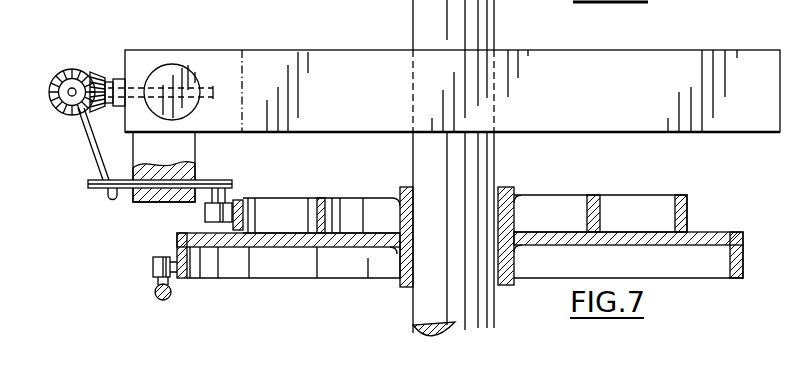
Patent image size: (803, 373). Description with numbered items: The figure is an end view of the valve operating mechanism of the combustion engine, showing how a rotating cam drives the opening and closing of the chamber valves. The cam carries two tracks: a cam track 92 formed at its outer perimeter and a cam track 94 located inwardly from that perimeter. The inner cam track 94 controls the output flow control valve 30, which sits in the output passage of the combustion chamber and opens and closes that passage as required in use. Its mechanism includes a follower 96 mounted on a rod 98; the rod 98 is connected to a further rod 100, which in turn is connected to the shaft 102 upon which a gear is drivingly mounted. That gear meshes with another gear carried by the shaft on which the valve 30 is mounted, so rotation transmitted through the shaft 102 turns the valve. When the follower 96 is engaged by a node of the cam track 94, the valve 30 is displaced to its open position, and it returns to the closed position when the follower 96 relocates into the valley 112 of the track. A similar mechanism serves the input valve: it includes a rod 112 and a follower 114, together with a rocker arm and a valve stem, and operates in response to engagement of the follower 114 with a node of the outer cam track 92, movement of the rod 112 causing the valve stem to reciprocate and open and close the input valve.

The output flow control valve 30 is at (170, 72).
The cam track 92 is at (177, 246).
The cam track 94 is at (244, 210).
The follower 96 is at (205, 216).
The rod 98 is at (213, 180).
The further rod 100 is at (90, 145).
The shaft 102 is at (70, 90).
The rod 112 is at (172, 290).
The follower 114 is at (153, 265).